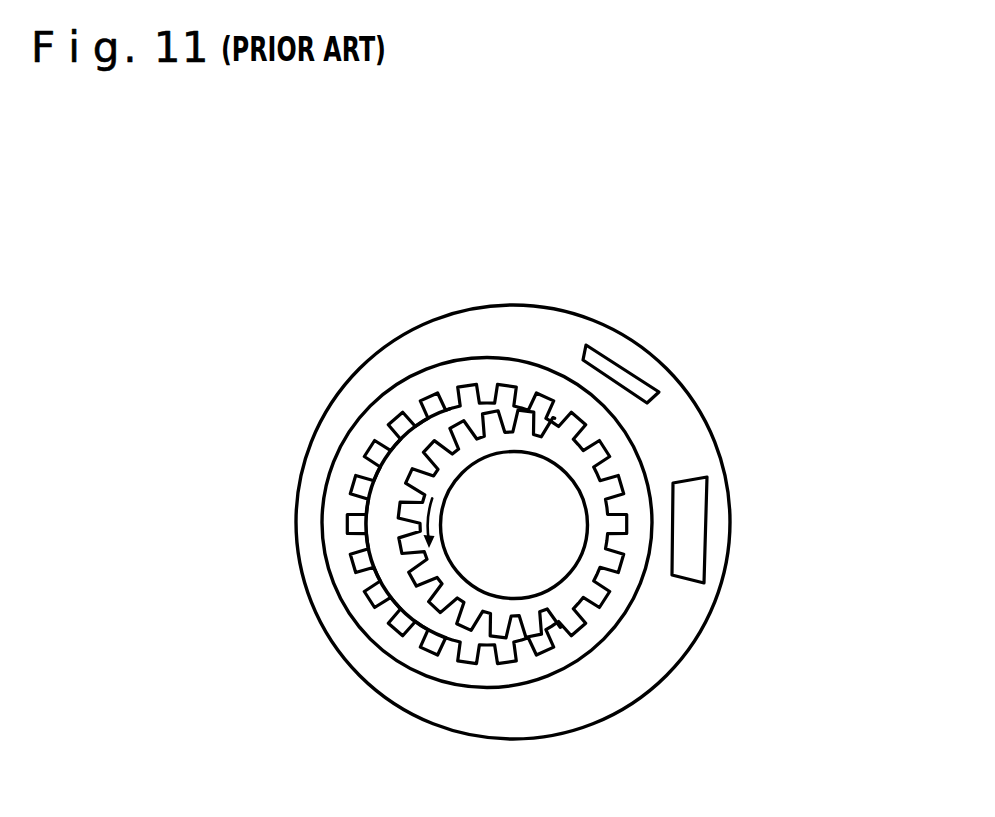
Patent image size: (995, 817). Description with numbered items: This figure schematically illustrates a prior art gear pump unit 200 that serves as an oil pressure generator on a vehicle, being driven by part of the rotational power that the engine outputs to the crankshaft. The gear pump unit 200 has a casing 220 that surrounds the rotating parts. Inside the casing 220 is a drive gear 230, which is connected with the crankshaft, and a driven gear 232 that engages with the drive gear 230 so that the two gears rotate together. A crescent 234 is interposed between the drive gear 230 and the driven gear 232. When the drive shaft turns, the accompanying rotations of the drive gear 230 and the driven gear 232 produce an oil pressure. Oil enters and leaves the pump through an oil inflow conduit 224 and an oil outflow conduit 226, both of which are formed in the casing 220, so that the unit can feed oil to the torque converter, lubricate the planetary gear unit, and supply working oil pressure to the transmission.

The gear pump unit 200 is at (693, 245).
The casing 220 is at (678, 407).
The oil inflow conduit 224 is at (627, 363).
The oil outflow conduit 226 is at (702, 482).
The drive gear 230 is at (612, 520).
The driven gear 232 is at (632, 543).
The crescent 234 is at (382, 488).